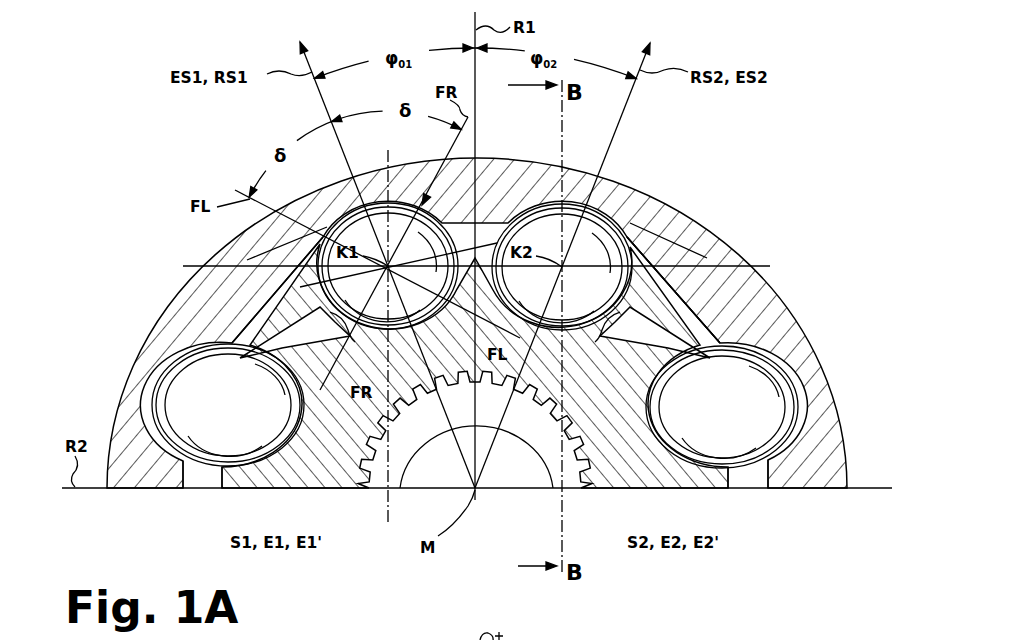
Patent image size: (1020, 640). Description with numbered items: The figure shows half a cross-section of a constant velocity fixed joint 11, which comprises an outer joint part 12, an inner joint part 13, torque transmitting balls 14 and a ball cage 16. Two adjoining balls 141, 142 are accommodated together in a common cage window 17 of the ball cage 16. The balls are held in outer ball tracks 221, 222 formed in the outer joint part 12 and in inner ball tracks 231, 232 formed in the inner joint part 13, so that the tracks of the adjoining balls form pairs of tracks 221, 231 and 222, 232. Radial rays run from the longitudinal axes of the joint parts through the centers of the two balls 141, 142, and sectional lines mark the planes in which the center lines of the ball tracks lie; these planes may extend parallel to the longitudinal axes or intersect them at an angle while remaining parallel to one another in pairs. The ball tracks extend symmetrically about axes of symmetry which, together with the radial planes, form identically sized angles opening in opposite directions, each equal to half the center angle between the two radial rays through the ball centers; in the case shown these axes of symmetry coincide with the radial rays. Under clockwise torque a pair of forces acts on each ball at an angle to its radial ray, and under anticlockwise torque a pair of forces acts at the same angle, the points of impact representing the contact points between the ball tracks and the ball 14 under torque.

The constant velocity fixed joint 11 is at (707, 213).
The outer joint part 12 is at (740, 297).
The inner joint part 13 is at (677, 488).
The torque transmitting balls 14 is at (800, 373).
The first ball 141 is at (377, 213).
The second ball 142 is at (577, 205).
The ball cage 16 is at (733, 317).
The cage window 17 is at (693, 262).
The first outer ball track 221 is at (327, 227).
The second outer ball track 222 is at (627, 230).
The first inner ball track 231 is at (353, 330).
The second inner ball track 232 is at (597, 330).